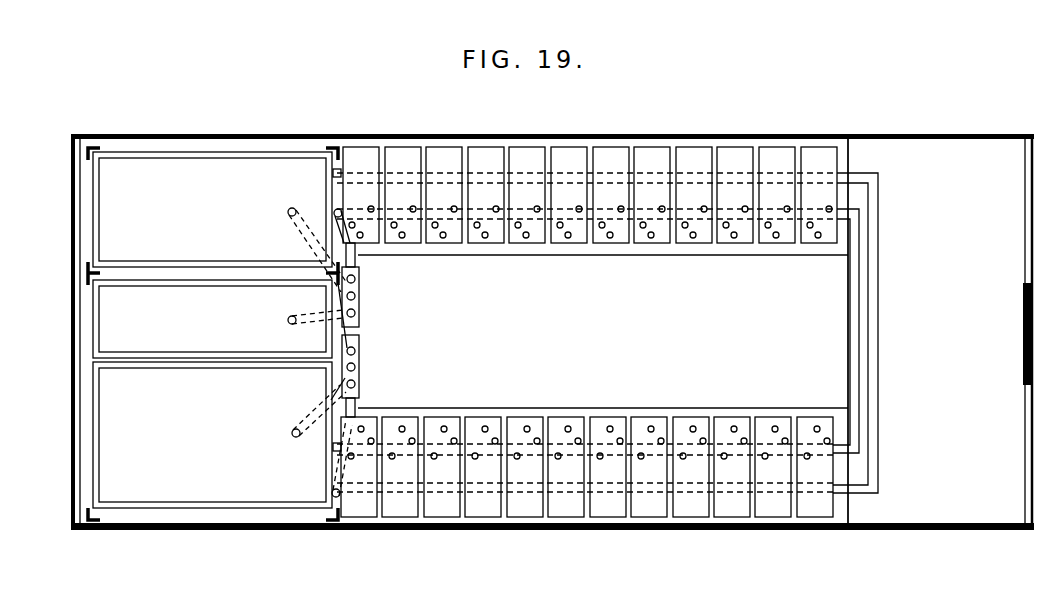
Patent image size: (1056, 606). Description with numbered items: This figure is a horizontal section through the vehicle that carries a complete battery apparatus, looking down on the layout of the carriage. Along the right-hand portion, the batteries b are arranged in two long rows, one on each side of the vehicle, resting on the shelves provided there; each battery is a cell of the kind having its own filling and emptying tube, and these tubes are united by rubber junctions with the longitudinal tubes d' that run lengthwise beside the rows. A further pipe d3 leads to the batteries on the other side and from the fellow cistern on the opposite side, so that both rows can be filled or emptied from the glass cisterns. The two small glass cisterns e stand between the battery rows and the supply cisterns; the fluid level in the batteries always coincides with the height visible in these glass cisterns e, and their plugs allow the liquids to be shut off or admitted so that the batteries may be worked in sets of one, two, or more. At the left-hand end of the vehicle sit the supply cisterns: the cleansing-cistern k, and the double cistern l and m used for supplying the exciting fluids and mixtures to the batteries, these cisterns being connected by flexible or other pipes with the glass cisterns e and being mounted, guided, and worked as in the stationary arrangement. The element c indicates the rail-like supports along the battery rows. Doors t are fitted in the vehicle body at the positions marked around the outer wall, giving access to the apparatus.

The doors t is at (880, 134).
The cleansing-cistern k is at (213, 216).
The double cistern l is at (212, 319).
The double cistern m is at (213, 441).
The glass cisterns e is at (332, 333).
The batteries b is at (589, 332).
The rails c is at (603, 329).
The longitudinal tubes d' is at (621, 334).
The pipe d3 is at (857, 217).